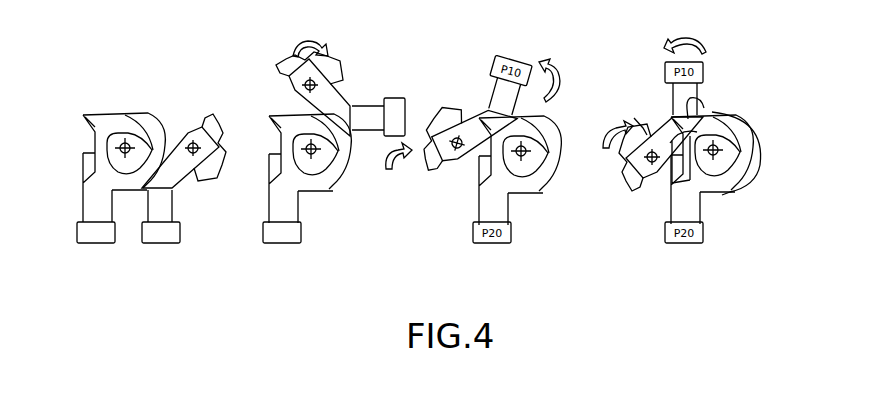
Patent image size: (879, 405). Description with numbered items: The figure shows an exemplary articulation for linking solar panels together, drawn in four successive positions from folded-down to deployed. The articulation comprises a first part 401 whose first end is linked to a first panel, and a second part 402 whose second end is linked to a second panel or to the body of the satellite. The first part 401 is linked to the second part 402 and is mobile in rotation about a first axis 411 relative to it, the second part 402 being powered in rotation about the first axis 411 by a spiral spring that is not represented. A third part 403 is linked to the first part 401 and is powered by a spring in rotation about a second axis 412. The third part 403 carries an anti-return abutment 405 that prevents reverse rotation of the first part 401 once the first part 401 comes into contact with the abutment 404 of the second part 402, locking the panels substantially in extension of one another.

The first part 401 is at (166, 200).
The second part 402 is at (92, 118).
The third part 403 is at (206, 116).
The abutment 404 is at (670, 166).
The anti-return abutment 405 is at (688, 105).
The first axis 411 is at (741, 143).
The second axis 412 is at (643, 133).